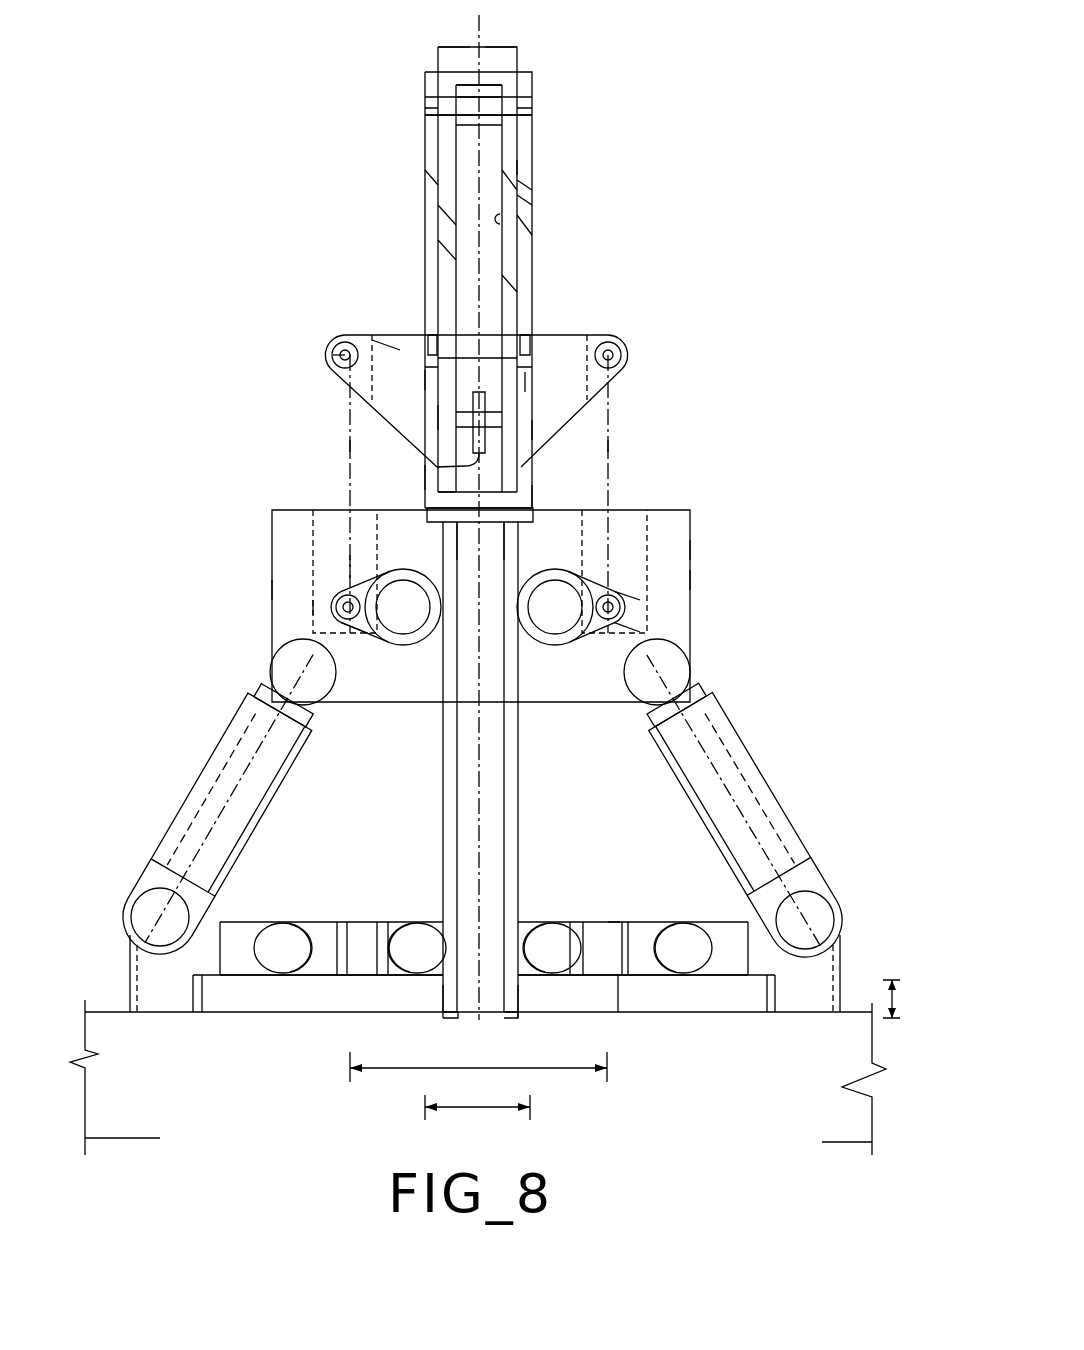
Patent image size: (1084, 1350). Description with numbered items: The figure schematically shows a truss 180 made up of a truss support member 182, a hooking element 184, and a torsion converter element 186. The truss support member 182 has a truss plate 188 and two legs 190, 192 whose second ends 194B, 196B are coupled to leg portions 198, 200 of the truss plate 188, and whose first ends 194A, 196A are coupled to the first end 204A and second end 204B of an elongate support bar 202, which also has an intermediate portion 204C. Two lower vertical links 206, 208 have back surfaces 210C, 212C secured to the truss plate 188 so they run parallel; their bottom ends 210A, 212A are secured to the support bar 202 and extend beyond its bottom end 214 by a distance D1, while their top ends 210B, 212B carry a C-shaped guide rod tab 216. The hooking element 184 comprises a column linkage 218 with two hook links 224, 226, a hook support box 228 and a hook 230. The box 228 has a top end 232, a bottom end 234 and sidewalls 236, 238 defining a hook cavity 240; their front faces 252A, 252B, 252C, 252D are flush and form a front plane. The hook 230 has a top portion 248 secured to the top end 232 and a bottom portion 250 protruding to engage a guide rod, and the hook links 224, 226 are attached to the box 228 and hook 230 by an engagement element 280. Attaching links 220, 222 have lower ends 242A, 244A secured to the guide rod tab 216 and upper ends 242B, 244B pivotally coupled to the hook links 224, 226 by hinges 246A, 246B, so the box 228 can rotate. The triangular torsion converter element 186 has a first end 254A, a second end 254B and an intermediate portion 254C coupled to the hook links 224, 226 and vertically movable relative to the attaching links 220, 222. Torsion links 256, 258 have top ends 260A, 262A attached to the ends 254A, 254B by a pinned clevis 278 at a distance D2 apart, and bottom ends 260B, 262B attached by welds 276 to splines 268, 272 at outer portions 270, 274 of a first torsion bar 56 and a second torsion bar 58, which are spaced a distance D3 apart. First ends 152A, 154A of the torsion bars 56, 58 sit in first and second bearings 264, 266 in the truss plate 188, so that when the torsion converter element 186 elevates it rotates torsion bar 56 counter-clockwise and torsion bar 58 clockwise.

The truss 180 is at (676, 116).
The truss support member 182 is at (695, 598).
The hooking element 184 is at (547, 247).
The torsion converter element 186 is at (570, 337).
The truss plate 188 is at (678, 552).
The leg 190 is at (761, 773).
The leg 192 is at (220, 745).
The first end of leg 190 194A is at (843, 915).
The second end of leg 190 194B is at (690, 680).
The first end of leg 192 196A is at (150, 882).
The second end of leg 192 196B is at (272, 668).
The leg portion 198 is at (682, 580).
The leg portion 200 is at (293, 590).
The elongate support bar 202 is at (613, 922).
The first end of elongate support bar 204A is at (827, 977).
The second end of elongate support bar 204B is at (150, 975).
The intermediate portion of elongate support bar 204C is at (565, 922).
The lower vertical link 206 is at (506, 828).
The lower vertical link 208 is at (455, 828).
The bottom end of lower vertical link 206 210A is at (518, 988).
The top end of lower vertical link 206 210B is at (512, 555).
The back surface of lower vertical link 206 210C is at (520, 778).
The bottom end of lower vertical link 208 212A is at (443, 988).
The top end of lower vertical link 208 212B is at (447, 543).
The back surface of lower vertical link 208 212C is at (445, 778).
The bottom end of elongate support bar 214 is at (618, 1000).
The guide rod tab 216 is at (545, 514).
The column linkage 218 is at (513, 167).
The attaching link 220 is at (527, 428).
The attaching link 222 is at (430, 417).
The hook link 224 is at (533, 200).
The hook link 226 is at (430, 177).
The hook support box 228 is at (532, 185).
The hook 230 is at (517, 410).
The top end of hook support box 232 is at (502, 57).
The bottom end of hook support box 234 is at (430, 492).
The sidewall of hook support box 236 is at (513, 283).
The sidewall of hook support box 238 is at (445, 248).
The hook cavity 240 is at (533, 225).
The lower end of attaching link 220 242A is at (540, 502).
The upper end of attaching link 220 242B is at (525, 380).
The lower end of attaching link 222 244A is at (427, 475).
The upper end of attaching link 222 244B is at (423, 378).
The hinge 246A is at (528, 335).
The hinge 246B is at (435, 335).
The top portion of hook 248 is at (463, 137).
The bottom portion of hook 250 is at (430, 462).
The front face of top end 252A is at (455, 57).
The front face of bottom end 252B is at (357, 568).
The front face of sidewall 236 252C is at (513, 178).
The front face of sidewall 238 252D is at (445, 215).
The first end of torsion converter element 254A is at (622, 342).
The second end of torsion converter element 254B is at (345, 337).
The intermediate portion of torsion converter element 254C is at (398, 348).
The torsion link 256 is at (610, 453).
The torsion link 258 is at (347, 448).
The top end of torsion link 256 260A is at (624, 355).
The bottom end of torsion link 256 260B is at (622, 598).
The top end of torsion link 258 262A is at (345, 342).
The bottom end of torsion link 258 262B is at (336, 597).
The first bearing 264 is at (575, 637).
The second bearing 266 is at (385, 637).
The spline 268 is at (640, 613).
The outer portion of torsion bar 56 270 is at (630, 625).
The spline 272 is at (318, 607).
The outer portion of torsion bar 58 274 is at (370, 618).
The welds 276 is at (348, 594).
The pinned clevis 278 is at (333, 357).
The engagement element 280 is at (462, 98).
The first torsion bar 56 is at (552, 612).
The second torsion bar 58 is at (403, 612).
The first end of first torsion bar 152A is at (547, 620).
The first end of second torsion bar 154A is at (412, 620).
The distance D1 is at (907, 1000).
The distance D2 is at (478, 1060).
The distance D3 is at (477, 1099).